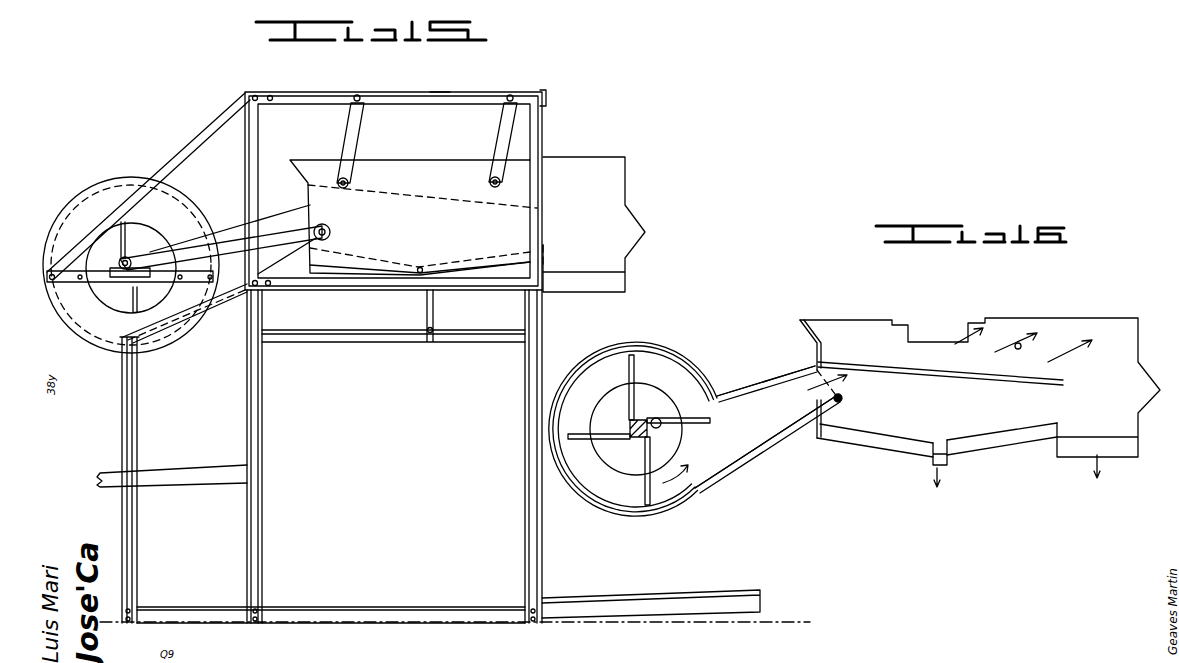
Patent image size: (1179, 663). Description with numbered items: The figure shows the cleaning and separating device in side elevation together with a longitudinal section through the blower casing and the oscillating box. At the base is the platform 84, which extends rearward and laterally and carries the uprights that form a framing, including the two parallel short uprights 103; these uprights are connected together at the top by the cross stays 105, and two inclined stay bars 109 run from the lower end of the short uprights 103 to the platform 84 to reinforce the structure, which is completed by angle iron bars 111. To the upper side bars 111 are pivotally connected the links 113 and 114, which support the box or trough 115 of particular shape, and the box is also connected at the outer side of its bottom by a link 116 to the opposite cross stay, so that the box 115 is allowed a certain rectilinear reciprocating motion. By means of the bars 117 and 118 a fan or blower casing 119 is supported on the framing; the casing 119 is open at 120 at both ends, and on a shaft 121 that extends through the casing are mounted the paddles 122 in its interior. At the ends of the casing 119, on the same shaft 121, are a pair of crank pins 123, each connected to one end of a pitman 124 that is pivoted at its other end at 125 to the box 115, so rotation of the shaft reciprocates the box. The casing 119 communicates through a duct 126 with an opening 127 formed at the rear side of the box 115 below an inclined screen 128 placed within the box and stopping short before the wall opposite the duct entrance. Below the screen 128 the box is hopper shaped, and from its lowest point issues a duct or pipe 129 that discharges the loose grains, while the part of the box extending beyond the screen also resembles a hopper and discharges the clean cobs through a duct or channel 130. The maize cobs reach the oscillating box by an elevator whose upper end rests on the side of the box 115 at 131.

In FIG. 15, the platform 84 is at (460, 603).
In FIG. 15, the uprights 103 is at (543, 190).
In FIG. 15, the cross stays 105 is at (548, 100).
In FIG. 15, the inclined stay bars 109 is at (263, 404).
In FIG. 15, the angle iron bars 111 is at (438, 93).
In FIG. 15, the link 113 is at (360, 134).
In FIG. 15, the link 114 is at (500, 134).
In FIG. 15, the box or trough 115 is at (410, 217).
In FIG. 16, the box or trough 115 is at (980, 387).
In FIG. 15, the link 116 is at (425, 313).
In FIG. 15, the bar 117 is at (212, 132).
In FIG. 15, the bar 118 is at (122, 406).
In FIG. 15, the fan or blower casing 119 is at (97, 196).
In FIG. 16, the fan or blower casing 119 is at (695, 360).
In FIG. 15, the opening 120 is at (119, 262).
In FIG. 16, the opening 120 is at (636, 429).
In FIG. 16, the shaft 121 is at (648, 419).
In FIG. 15, the paddles 122 is at (95, 343).
In FIG. 16, the paddles 122 is at (627, 383).
In FIG. 15, the crank pins 123 is at (135, 263).
In FIG. 15, the pitman 124 is at (273, 228).
In FIG. 15, the pivot 125 is at (331, 230).
In FIG. 16, the pivot 125 is at (843, 398).
In FIG. 16, the duct 126 is at (748, 392).
In FIG. 16, the opening 127 is at (815, 368).
In FIG. 15, the inclined screen 128 is at (428, 196).
In FIG. 16, the inclined screen 128 is at (972, 380).
In FIG. 16, the duct or pipe 129 is at (930, 470).
In FIG. 16, the duct or channel 130 is at (1078, 460).
In FIG. 16, the elevator rest 131 is at (935, 340).